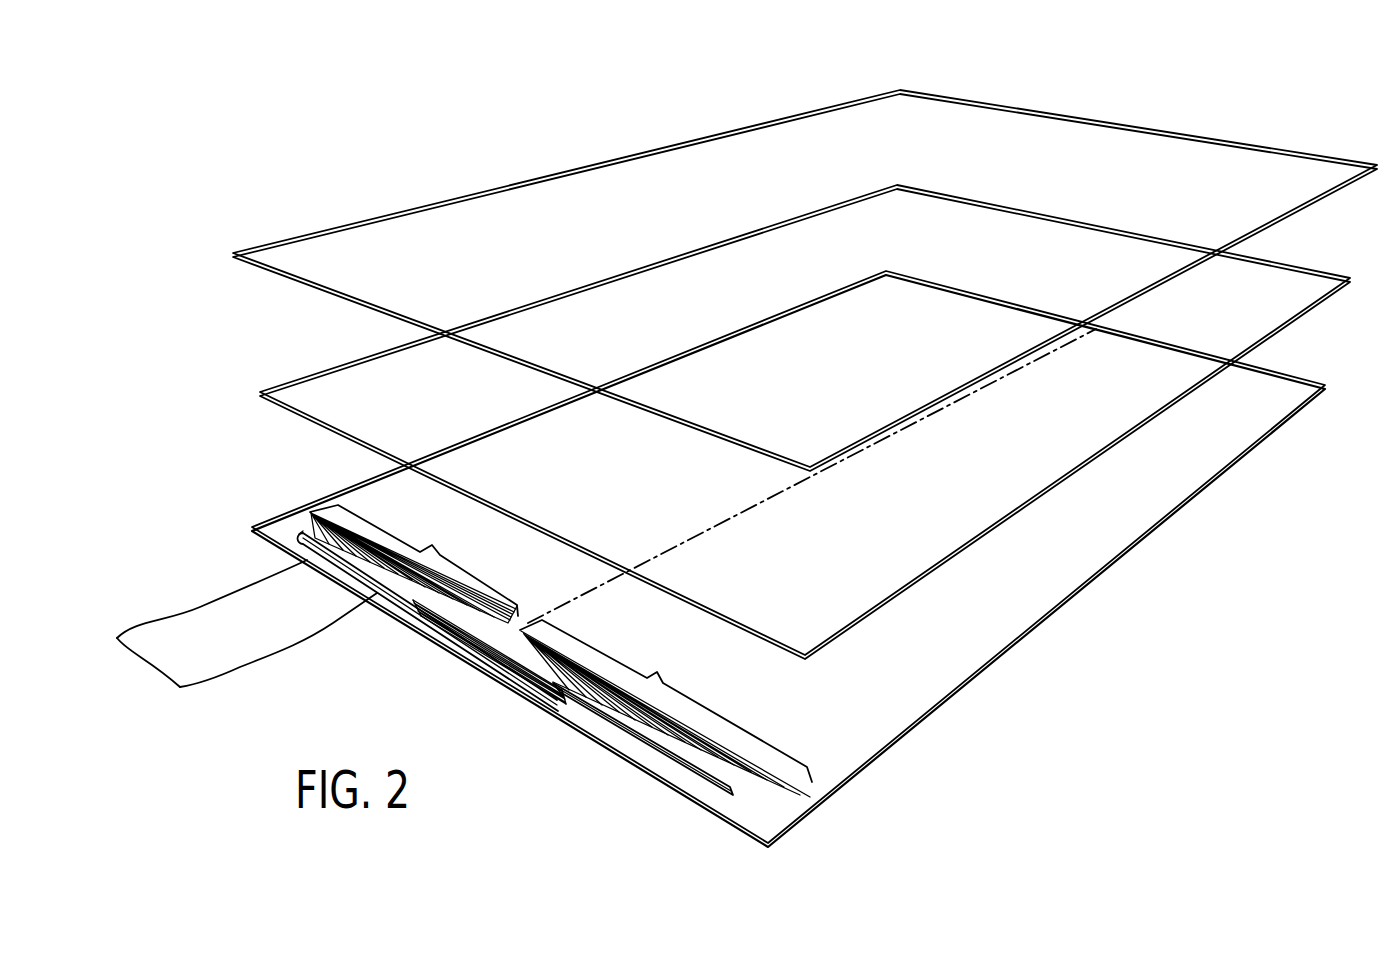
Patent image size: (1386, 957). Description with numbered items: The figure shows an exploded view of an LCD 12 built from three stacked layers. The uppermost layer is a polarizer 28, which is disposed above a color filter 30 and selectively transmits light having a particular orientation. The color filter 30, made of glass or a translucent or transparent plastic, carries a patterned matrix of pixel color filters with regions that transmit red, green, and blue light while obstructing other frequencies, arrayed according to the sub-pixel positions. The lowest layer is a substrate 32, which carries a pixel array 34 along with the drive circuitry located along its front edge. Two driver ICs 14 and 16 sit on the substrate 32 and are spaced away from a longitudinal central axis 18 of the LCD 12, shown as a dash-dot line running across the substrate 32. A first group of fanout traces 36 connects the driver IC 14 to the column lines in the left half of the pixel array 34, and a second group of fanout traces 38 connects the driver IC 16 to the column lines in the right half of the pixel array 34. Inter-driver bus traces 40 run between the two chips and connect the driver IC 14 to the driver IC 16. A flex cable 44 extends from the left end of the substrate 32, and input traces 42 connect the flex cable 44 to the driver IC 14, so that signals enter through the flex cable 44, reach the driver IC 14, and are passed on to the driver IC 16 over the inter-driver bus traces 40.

The LCD 12 is at (418, 145).
The driver IC 14 is at (299, 533).
The driver IC 16 is at (667, 745).
The longitudinal central axis 18 is at (577, 600).
The polarizer 28 is at (612, 175).
The color filter 30 is at (372, 378).
The substrate 32 is at (793, 827).
The pixel array 34 is at (1080, 553).
The first group of fanout traces 36 is at (414, 560).
The second group of fanout traces 38 is at (666, 701).
The inter-driver bus traces 40 is at (507, 642).
The input traces 42 is at (296, 539).
The flex cable 44 is at (282, 640).